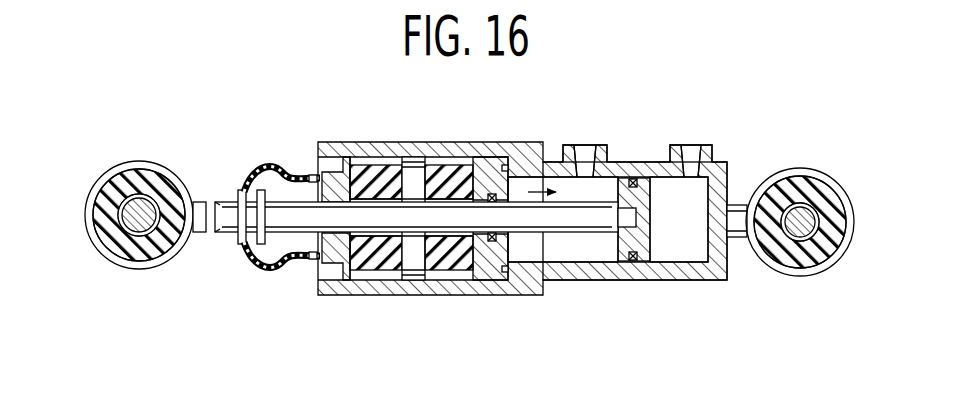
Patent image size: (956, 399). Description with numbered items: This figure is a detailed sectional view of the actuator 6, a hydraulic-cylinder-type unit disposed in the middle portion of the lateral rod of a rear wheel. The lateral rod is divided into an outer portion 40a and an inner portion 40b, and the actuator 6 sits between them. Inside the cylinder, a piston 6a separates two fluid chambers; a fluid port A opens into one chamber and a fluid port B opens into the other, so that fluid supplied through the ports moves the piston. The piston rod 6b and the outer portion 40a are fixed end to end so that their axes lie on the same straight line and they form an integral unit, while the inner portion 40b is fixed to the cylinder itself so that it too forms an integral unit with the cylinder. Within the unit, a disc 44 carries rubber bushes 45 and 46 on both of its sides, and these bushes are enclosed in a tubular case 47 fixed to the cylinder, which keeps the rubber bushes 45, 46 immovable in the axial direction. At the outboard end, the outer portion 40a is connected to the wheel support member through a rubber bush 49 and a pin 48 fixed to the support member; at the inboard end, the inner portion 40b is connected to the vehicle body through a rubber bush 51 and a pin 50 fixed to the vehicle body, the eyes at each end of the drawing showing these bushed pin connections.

The actuator 6 is at (541, 141).
The piston 6a is at (652, 283).
The piston rod 6b is at (578, 283).
The fluid port A is at (693, 143).
The fluid port B is at (590, 143).
The outer portion of the lateral rod 40a is at (230, 200).
The inner portion of the lateral rod 40b is at (740, 202).
The disc 44 is at (423, 141).
The rubber bush 45 is at (370, 141).
The rubber bush 46 is at (468, 141).
The tubular case 47 is at (418, 298).
The pin 48 is at (159, 166).
The rubber bush 49 is at (163, 275).
The pin 50 is at (816, 170).
The rubber bush 51 is at (789, 284).